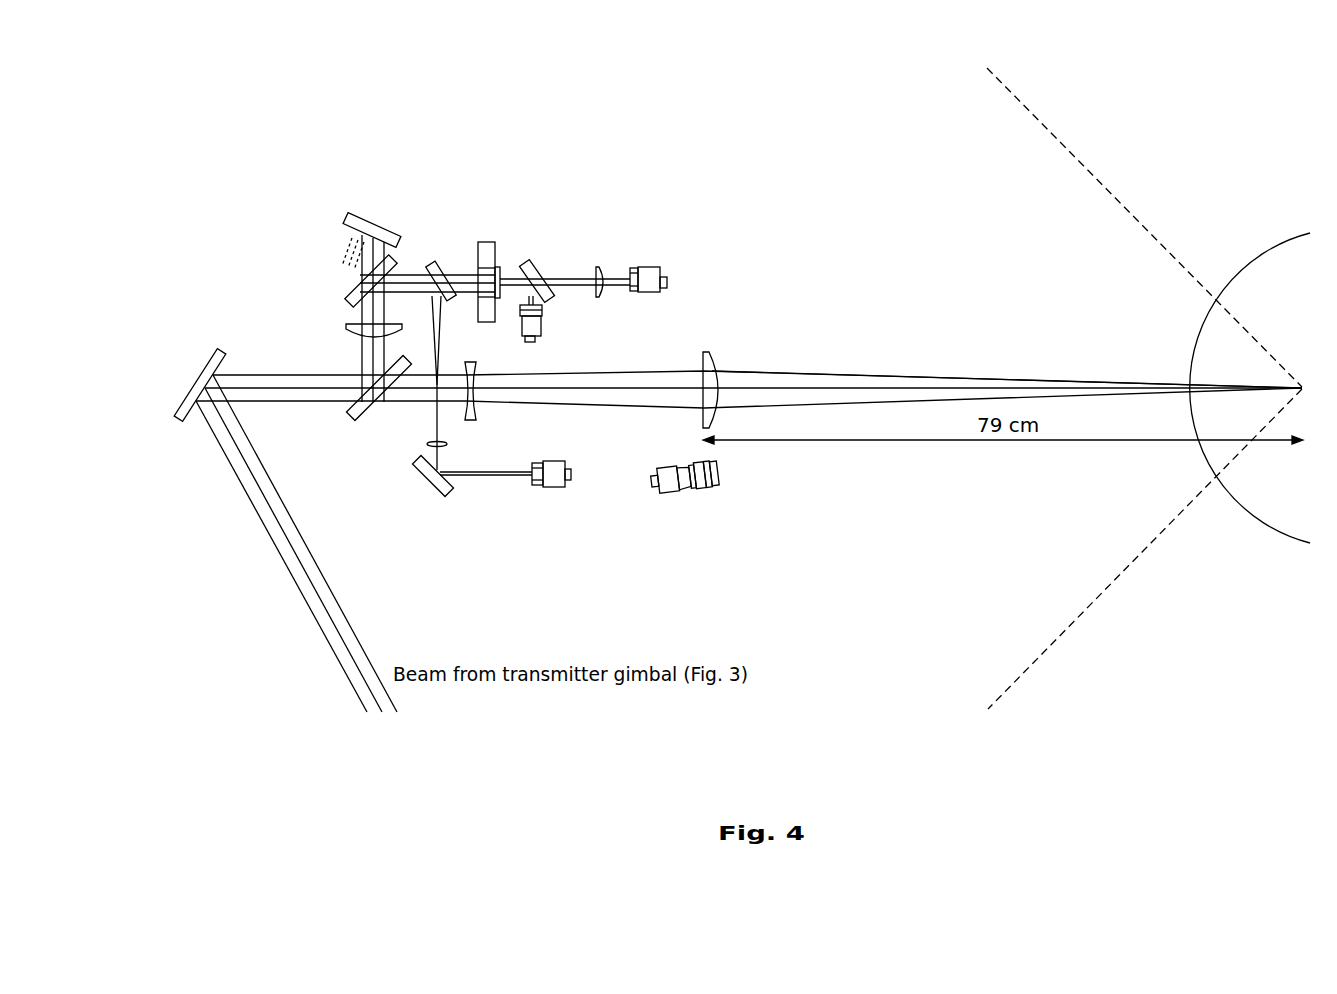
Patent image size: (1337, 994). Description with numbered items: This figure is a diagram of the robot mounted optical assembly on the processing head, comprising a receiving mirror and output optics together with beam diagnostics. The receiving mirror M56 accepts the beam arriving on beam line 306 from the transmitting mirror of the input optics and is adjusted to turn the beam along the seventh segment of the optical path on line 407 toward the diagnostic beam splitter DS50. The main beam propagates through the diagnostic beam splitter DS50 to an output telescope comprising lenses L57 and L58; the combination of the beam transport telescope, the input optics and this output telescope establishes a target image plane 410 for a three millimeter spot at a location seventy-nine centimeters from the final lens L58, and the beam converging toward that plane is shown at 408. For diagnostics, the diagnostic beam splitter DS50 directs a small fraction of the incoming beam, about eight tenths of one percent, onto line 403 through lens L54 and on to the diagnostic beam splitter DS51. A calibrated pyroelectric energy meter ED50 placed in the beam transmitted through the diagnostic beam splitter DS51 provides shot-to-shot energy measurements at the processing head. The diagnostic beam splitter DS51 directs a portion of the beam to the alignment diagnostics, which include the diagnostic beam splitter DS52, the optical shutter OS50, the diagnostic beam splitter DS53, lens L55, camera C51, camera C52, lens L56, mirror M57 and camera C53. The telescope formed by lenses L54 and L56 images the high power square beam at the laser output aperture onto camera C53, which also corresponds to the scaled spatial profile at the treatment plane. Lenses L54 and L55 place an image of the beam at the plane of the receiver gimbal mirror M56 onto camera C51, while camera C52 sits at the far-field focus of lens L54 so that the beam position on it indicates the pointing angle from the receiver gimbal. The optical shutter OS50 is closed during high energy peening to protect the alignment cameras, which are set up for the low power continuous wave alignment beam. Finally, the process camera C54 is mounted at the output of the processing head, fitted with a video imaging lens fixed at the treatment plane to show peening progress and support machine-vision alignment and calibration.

The beam line 306 is at (301, 592).
The receiving mirror M56 is at (201, 371).
The line 403 is at (272, 368).
The line 407 is at (357, 362).
The diagnostic beam splitter DS50 is at (345, 395).
The calibrated pyroelectric energy meter ED50 is at (372, 293).
The diagnostic beam splitter DS51 is at (342, 281).
The lens L54 is at (350, 331).
The diagnostic beam splitter DS52 is at (427, 313).
The optical shutter OS50 is at (485, 265).
The diagnostic beam splitter DS53 is at (565, 271).
The lens L55 is at (608, 267).
The camera C51 is at (673, 280).
The camera C52 is at (563, 323).
The lens L57 is at (497, 402).
The lens L58 is at (706, 374).
The lens L56 is at (411, 427).
The mirror M57 is at (472, 491).
The camera C53 is at (551, 494).
The process camera C54 is at (685, 494).
The converging beam 408 is at (898, 373).
The target image plane 410 is at (1301, 394).